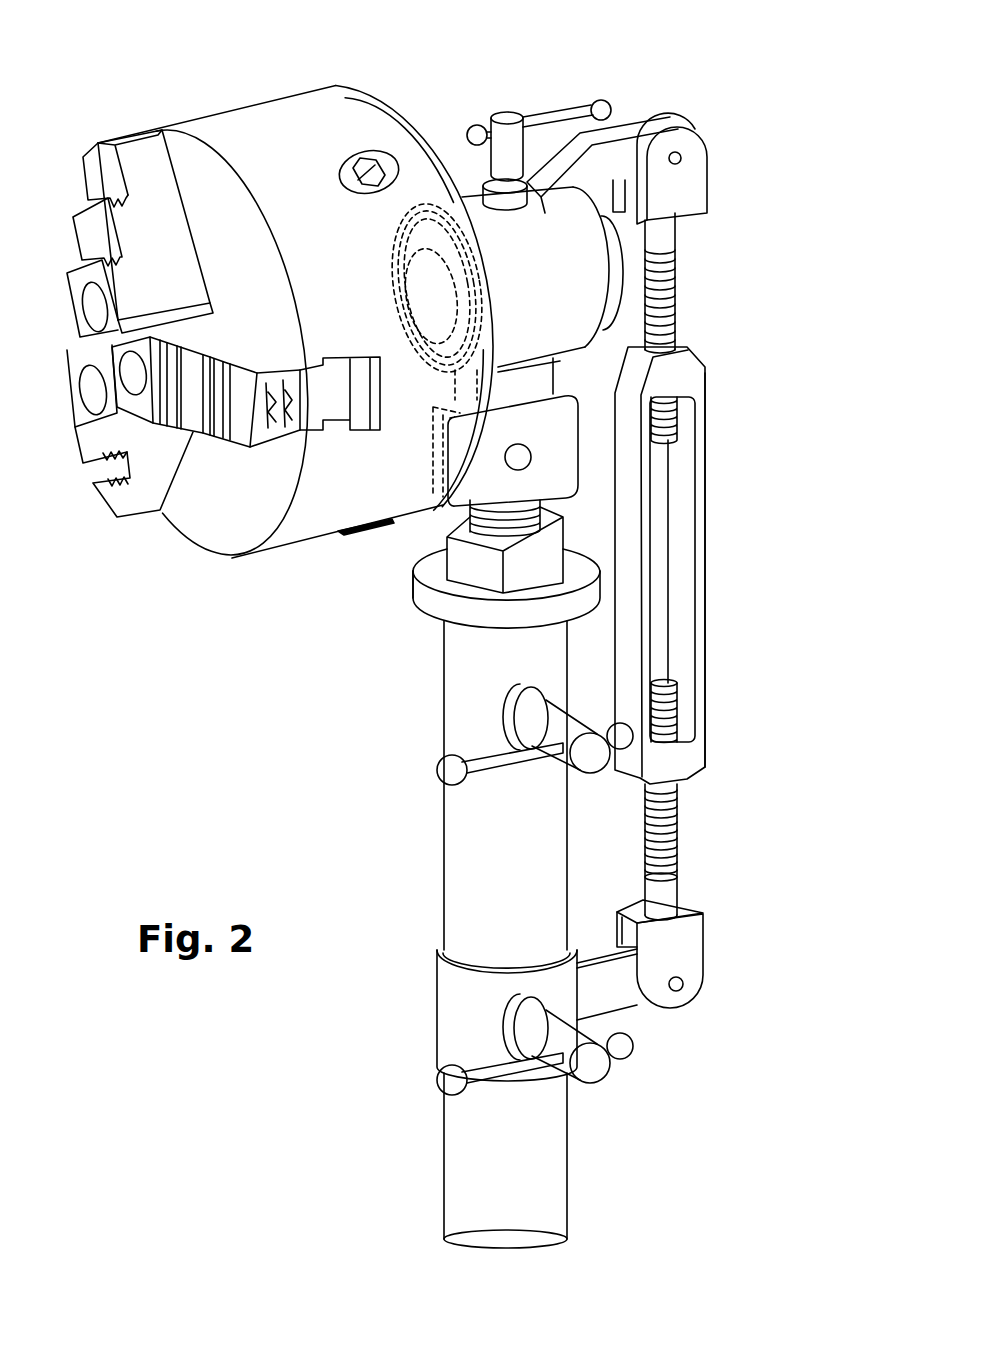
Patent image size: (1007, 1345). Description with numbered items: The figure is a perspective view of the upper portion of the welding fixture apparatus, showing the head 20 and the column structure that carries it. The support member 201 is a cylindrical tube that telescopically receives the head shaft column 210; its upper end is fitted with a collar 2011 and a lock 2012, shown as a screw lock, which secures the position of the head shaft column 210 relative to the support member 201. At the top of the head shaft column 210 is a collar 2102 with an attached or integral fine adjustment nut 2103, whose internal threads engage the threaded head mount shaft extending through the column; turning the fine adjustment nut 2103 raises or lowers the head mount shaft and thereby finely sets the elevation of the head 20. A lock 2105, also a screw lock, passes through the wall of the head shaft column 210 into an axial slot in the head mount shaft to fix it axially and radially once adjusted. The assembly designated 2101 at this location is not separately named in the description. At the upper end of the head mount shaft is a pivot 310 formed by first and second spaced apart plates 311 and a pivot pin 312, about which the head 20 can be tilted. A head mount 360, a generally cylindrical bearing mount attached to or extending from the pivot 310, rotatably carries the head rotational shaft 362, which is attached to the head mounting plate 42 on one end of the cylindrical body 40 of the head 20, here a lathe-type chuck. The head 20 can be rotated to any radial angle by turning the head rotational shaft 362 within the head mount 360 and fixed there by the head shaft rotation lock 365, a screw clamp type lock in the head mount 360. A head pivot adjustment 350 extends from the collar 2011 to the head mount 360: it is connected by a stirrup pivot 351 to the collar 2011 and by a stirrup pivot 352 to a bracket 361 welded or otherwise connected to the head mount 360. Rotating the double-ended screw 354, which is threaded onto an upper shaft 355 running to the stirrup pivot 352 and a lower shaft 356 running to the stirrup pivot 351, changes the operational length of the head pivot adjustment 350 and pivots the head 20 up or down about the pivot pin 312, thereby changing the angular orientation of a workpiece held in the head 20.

The head 20 is at (288, 88).
The cylindrical body 40 is at (213, 112).
The head mounting plate 42 is at (412, 130).
The head shaft rotation lock 365 is at (528, 107).
The bracket 361 is at (612, 148).
The stirrup pivot 352 is at (710, 178).
The head rotational shaft 362 is at (620, 250).
The upper shaft 355 is at (679, 290).
The head mount 360 is at (580, 313).
The spaced apart plates 311 is at (563, 420).
The fine adjustment nut 2103 is at (550, 557).
The head pivot adjustment 350 is at (747, 597).
The double-ended screw 354 is at (700, 653).
The pivot pin 312 is at (465, 505).
The pivot 310 is at (517, 457).
The support seat 2101 is at (413, 598).
The collar 2102 is at (440, 607).
The lock 2105 is at (503, 716).
The head shaft column 210 is at (502, 820).
The lower shaft 356 is at (680, 850).
The stirrup pivot 351 is at (710, 968).
The collar 2011 is at (450, 1007).
The lock 2012 is at (637, 1045).
The support member 201 is at (553, 1183).